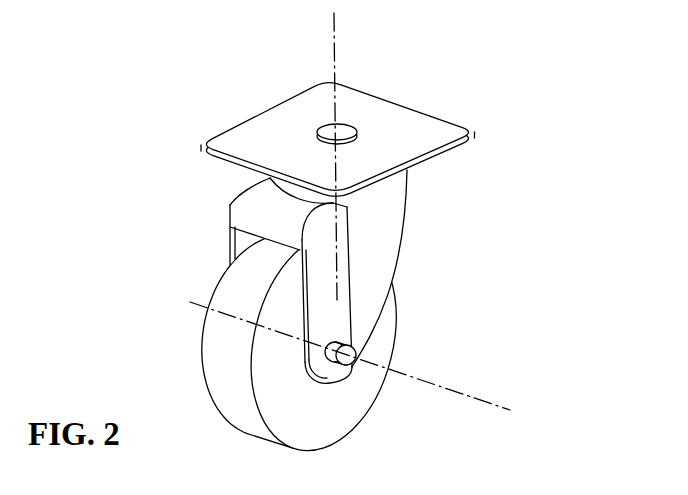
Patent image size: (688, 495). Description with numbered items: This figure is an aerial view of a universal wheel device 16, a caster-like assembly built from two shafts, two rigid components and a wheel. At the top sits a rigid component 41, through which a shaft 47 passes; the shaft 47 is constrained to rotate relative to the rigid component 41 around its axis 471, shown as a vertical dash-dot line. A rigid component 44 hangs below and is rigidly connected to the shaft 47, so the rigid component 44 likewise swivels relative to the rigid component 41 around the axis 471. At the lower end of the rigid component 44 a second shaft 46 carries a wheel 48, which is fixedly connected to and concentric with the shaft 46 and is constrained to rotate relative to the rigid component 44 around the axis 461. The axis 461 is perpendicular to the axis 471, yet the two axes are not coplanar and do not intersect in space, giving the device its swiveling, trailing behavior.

The universal wheel device 16 is at (347, 239).
The rigid component 41 is at (390, 140).
The rigid component 44 is at (383, 242).
The shaft 46 is at (348, 358).
The shaft 47 is at (355, 127).
The wheel 48 is at (225, 330).
The axis 461 is at (477, 399).
The axis 471 is at (334, 40).